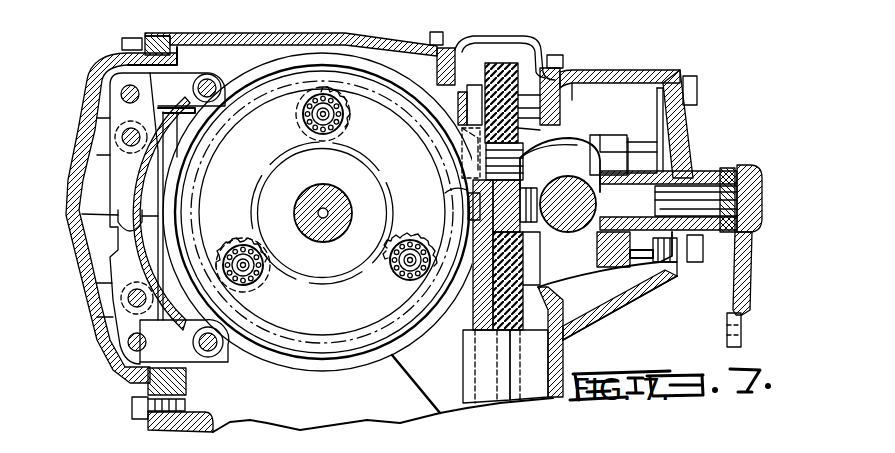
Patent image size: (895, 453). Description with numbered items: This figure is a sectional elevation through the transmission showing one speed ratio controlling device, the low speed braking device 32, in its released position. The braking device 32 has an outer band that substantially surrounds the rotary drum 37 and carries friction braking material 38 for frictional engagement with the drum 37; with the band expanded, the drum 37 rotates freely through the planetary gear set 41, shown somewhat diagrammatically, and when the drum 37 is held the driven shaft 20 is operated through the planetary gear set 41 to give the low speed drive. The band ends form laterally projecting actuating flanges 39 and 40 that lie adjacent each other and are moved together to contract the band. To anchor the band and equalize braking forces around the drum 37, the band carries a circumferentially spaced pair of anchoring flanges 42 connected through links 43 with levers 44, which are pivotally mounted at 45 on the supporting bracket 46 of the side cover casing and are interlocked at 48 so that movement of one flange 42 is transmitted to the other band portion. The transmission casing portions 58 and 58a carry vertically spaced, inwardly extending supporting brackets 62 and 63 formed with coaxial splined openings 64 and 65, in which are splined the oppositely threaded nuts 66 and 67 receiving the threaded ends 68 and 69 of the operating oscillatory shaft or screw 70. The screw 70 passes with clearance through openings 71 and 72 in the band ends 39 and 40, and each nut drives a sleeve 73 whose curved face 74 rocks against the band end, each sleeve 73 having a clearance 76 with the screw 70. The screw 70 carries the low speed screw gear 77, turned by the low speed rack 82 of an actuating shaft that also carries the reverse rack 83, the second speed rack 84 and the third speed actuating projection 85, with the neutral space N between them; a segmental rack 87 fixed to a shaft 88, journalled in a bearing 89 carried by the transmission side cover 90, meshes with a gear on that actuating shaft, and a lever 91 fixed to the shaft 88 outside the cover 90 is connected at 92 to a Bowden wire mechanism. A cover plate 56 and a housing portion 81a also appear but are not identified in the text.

The driven shaft 20 is at (333, 205).
The low speed ratio braking device 32 is at (324, 366).
The rotary element or drum 37 is at (278, 345).
The friction braking material 38 is at (362, 360).
The actuating flange 39 is at (470, 150).
The actuating flange 40 is at (473, 223).
The planetary gear set 41 is at (356, 114).
The anchoring flange 42 is at (78, 242).
The link 43 is at (160, 78).
The lever 44 is at (123, 173).
The pivot 45 is at (127, 300).
The supporting bracket 46 is at (106, 137).
The lever interlock 48 is at (82, 214).
The top cover plate 56 is at (273, 62).
The transmission casing portion 58 is at (592, 72).
The transmission casing portion 58a is at (570, 340).
The supporting bracket 62 is at (540, 100).
The supporting bracket 63 is at (560, 308).
The splined opening 64 is at (541, 112).
The splined opening 65 is at (552, 295).
The nut 66 is at (540, 125).
The nut 67 is at (518, 335).
The threaded end 68 is at (492, 82).
The threaded end 69 is at (490, 327).
The operating oscillatory shaft or screw 70 is at (522, 165).
The opening 71 is at (477, 163).
The opening 72 is at (368, 302).
The sleeve 73 is at (355, 318).
The curved face 74 is at (530, 137).
The clearance 76 is at (447, 78).
The low speed screw gear 77 is at (467, 190).
The housing dome 81a is at (340, 42).
The low speed rack 82 is at (530, 256).
The reverse rack 83 is at (612, 140).
The second speed rack 84 is at (562, 255).
The third speed actuating projection 85 is at (600, 250).
The segmental rack 87 is at (593, 135).
The shaft 88 is at (700, 172).
The bearing 89 is at (745, 172).
The transmission side cover 90 is at (692, 120).
The lever 91 is at (752, 262).
The connection 92 is at (742, 330).
The neutral space N is at (565, 180).